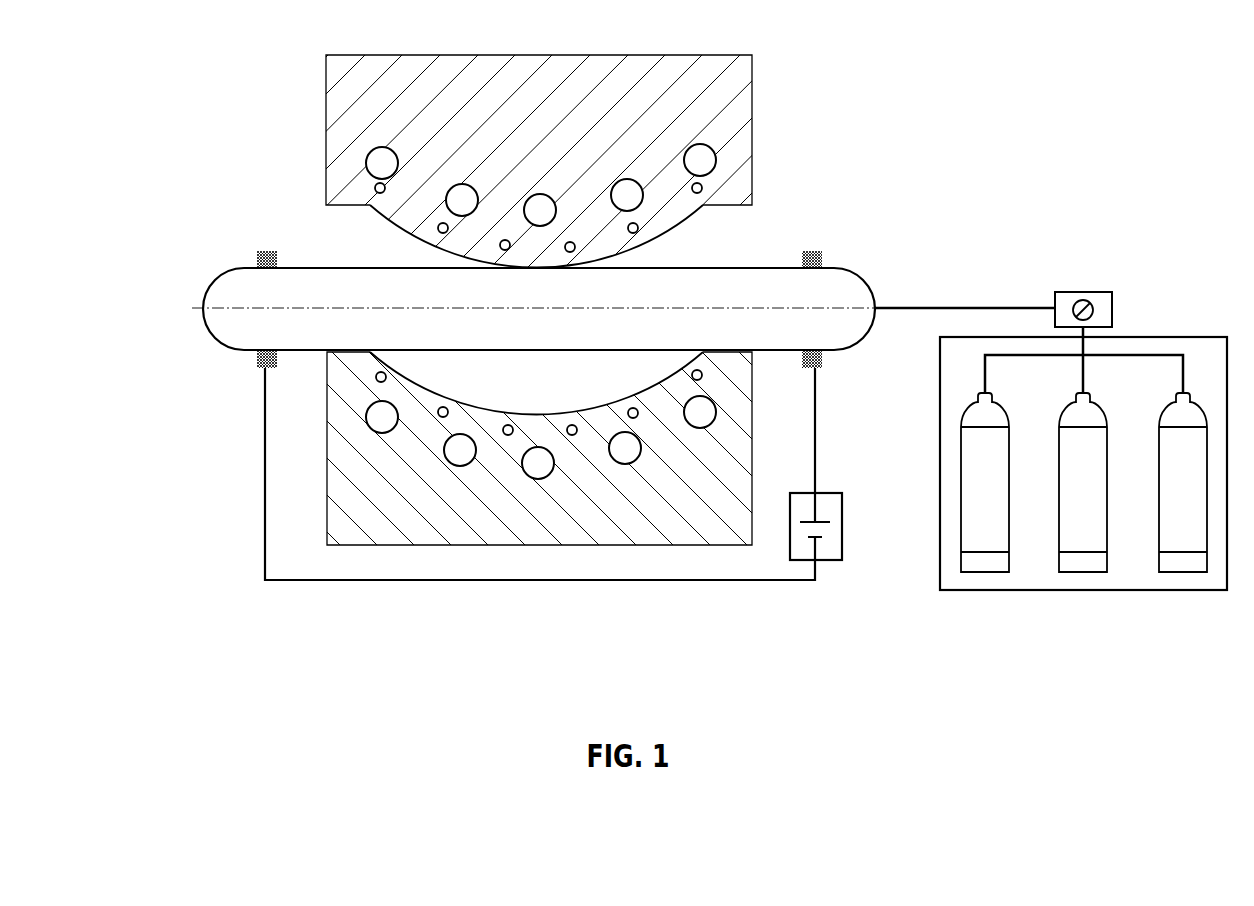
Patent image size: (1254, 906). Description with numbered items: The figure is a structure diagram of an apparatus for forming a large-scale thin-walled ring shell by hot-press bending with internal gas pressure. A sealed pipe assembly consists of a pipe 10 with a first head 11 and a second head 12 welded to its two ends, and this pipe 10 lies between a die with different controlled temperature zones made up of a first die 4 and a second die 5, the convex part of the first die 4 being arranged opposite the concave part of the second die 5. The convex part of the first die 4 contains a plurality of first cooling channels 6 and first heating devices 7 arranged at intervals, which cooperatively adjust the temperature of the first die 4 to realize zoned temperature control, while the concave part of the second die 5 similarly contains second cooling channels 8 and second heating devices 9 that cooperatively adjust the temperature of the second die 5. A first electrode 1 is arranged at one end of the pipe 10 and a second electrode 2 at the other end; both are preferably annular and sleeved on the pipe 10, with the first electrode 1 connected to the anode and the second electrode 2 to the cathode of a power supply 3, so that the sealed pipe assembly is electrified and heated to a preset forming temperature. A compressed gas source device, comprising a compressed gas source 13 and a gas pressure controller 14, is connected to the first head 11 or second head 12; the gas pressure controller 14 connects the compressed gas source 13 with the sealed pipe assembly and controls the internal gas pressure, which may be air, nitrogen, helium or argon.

The first electrode 1 is at (262, 367).
The second electrode 2 is at (822, 257).
The power supply 3 is at (780, 555).
The first die 4 is at (353, 97).
The second die 5 is at (343, 502).
The first cooling channels 6 is at (362, 163).
The first heating devices 7 is at (706, 184).
The second cooling channels 8 is at (376, 421).
The second heating devices 9 is at (378, 379).
The pipe 10 is at (703, 265).
The first head 11 is at (228, 287).
The second head 12 is at (848, 290).
The compressed gas source 13 is at (1168, 578).
The gas pressure controller 14 is at (1062, 290).